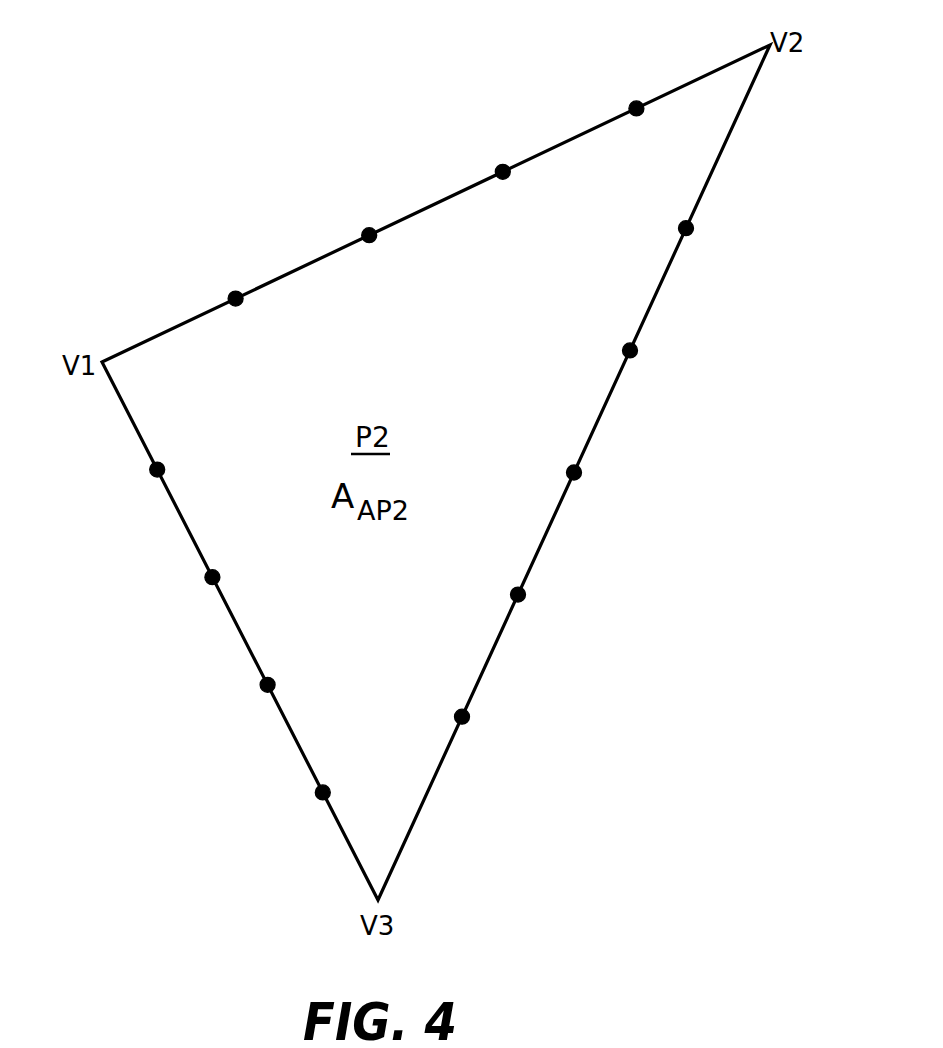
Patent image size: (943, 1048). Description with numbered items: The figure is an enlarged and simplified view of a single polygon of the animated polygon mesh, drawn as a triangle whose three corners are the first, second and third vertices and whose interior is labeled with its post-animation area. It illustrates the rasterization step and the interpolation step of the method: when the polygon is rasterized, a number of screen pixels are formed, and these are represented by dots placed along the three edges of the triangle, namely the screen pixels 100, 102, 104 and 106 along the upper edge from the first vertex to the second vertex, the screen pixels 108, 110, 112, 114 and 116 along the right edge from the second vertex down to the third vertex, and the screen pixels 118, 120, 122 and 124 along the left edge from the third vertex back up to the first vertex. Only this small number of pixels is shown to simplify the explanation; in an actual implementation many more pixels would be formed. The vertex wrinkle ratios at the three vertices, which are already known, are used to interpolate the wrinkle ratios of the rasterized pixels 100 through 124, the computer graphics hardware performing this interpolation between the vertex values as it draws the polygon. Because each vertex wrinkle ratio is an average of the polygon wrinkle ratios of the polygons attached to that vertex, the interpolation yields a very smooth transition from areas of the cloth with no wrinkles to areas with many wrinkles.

The screen pixel 100 is at (236, 291).
The screen pixel 102 is at (369, 228).
The screen pixel 104 is at (503, 164).
The screen pixel 106 is at (636, 101).
The screen pixel 108 is at (688, 237).
The screen pixel 110 is at (633, 359).
The screen pixel 112 is at (577, 481).
The screen pixel 114 is at (521, 603).
The screen pixel 116 is at (465, 725).
The screen pixel 118 is at (321, 801).
The screen pixel 120 is at (265, 694).
The screen pixel 122 is at (210, 586).
The screen pixel 124 is at (155, 478).